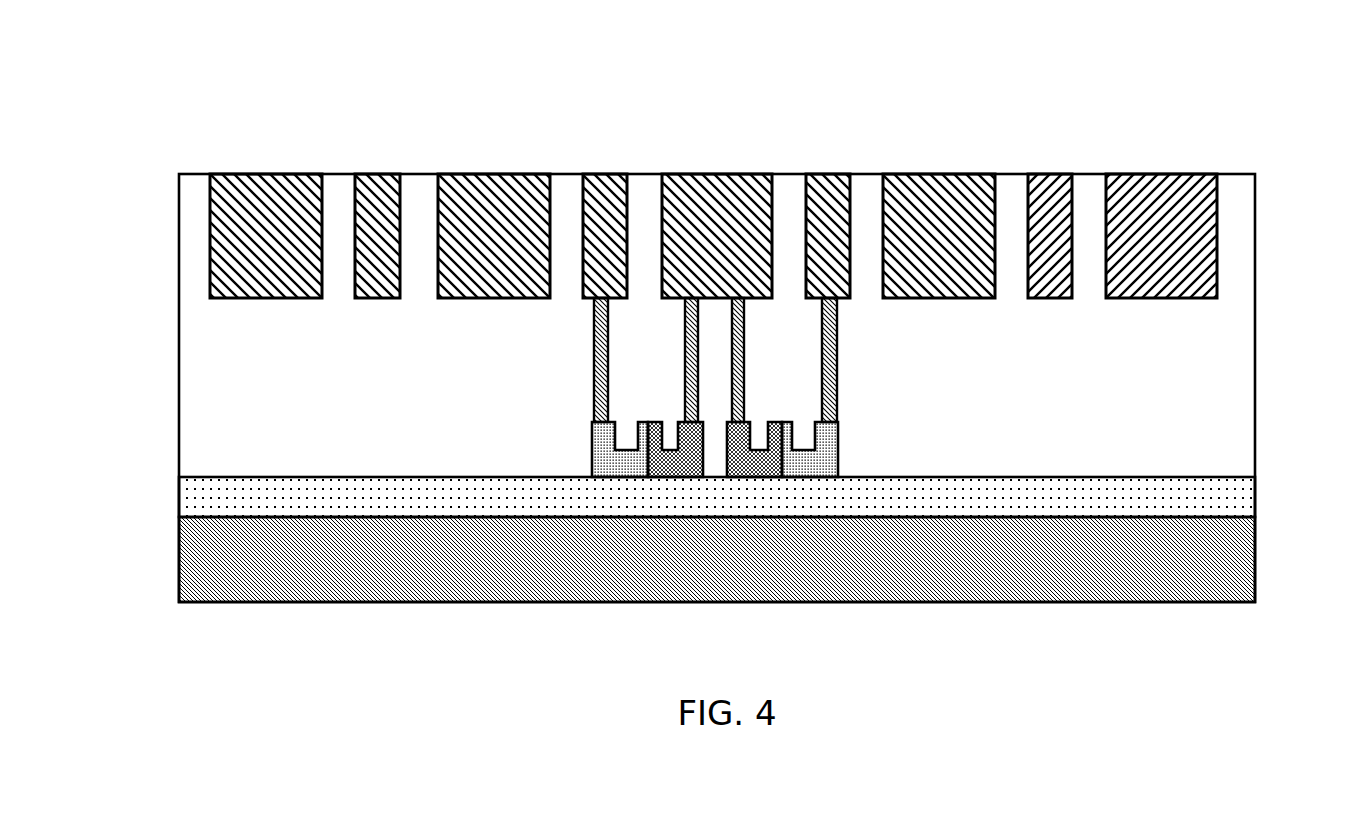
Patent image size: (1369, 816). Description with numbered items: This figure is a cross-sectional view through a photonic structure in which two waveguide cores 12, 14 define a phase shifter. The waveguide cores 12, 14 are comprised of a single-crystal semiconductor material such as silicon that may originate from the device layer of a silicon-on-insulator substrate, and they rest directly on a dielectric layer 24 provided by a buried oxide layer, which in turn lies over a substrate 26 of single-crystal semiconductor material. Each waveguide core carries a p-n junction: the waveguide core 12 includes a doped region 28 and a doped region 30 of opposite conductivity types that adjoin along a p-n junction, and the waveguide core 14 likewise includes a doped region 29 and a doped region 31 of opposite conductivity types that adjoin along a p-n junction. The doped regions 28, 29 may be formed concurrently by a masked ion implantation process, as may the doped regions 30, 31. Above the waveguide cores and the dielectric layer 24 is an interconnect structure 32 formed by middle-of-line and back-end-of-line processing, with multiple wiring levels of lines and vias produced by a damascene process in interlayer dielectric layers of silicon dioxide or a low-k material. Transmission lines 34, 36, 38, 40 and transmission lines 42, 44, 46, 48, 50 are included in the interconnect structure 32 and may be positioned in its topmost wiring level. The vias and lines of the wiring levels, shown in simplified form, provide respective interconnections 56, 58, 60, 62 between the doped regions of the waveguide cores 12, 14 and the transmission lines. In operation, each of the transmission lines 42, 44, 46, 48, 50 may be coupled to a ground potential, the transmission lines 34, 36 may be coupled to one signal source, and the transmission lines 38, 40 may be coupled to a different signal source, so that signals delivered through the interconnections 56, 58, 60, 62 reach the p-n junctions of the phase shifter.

The waveguide core 12 is at (537, 410).
The waveguide core 14 is at (867, 410).
The dielectric layer 24 is at (1217, 512).
The substrate 26 is at (1225, 580).
The doped region 28 is at (603, 440).
The doped region 29 is at (825, 440).
The doped region 30 is at (663, 468).
The doped region 31 is at (757, 465).
The interconnect structure 32 is at (227, 138).
The transmission line 34 is at (375, 192).
The transmission line 36 is at (608, 192).
The transmission line 38 is at (823, 192).
The transmission line 40 is at (1045, 192).
The transmission line 42 is at (255, 192).
The transmission line 44 is at (497, 192).
The transmission line 46 is at (718, 192).
The transmission line 48 is at (932, 192).
The transmission line 50 is at (1153, 192).
The interconnection 56 is at (603, 328).
The interconnection 58 is at (690, 362).
The interconnection 60 is at (737, 362).
The interconnection 62 is at (833, 320).